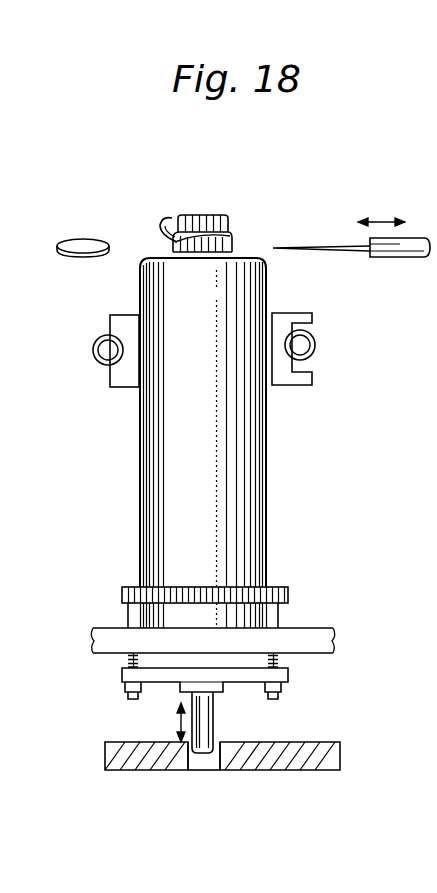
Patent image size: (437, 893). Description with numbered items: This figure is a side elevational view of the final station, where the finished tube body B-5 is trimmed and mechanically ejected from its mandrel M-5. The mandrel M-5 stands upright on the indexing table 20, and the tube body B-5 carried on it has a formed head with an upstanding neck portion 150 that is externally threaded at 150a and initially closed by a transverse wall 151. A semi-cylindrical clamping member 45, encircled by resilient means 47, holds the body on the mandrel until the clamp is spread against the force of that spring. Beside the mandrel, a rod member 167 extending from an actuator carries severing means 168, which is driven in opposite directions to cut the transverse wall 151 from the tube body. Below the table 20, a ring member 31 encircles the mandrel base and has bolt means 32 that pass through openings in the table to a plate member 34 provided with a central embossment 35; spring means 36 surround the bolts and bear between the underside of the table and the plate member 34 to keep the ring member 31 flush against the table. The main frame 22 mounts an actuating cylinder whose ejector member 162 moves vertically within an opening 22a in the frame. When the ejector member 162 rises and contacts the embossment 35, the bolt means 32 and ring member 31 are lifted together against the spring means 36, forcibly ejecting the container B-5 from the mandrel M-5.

The tube body B-5 is at (266, 468).
The neck portion 150 is at (233, 211).
The external threads 150a is at (166, 218).
The transverse wall 151 is at (84, 246).
The semi-cylindrical clamping member 45 is at (279, 318).
The resilient means 47 is at (315, 345).
The severing means 168 is at (304, 247).
The rod member 167 is at (414, 256).
The ring member 31 is at (282, 588).
The bolt means 32 is at (128, 611).
The mandrel M-5 is at (187, 620).
The table 20 is at (331, 650).
The plate member 34 is at (253, 680).
The central embossment 35 is at (180, 684).
The spring means 36 is at (126, 661).
The ejector member 162 is at (214, 726).
The main frame 22 is at (312, 748).
The opening 22a is at (191, 763).